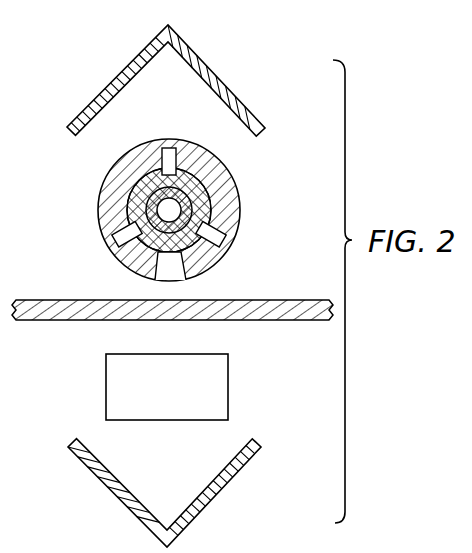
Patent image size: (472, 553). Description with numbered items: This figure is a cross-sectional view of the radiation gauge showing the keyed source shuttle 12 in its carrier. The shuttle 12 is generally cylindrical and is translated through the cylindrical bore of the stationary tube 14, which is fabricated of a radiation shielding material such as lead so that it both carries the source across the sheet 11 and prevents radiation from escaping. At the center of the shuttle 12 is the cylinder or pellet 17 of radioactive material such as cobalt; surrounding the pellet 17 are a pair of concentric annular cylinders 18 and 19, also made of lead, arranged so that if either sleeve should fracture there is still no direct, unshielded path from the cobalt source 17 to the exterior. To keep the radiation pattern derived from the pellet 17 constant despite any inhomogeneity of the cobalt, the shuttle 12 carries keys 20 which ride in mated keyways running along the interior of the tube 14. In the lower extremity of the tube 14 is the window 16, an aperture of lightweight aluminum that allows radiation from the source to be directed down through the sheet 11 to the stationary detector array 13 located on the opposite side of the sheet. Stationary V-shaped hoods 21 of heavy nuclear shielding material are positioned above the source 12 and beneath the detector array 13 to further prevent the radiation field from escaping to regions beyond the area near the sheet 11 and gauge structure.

The sheet 11 is at (300, 300).
The scanning penetrating radiation source 12 is at (122, 210).
The stationary detector array 13 is at (222, 383).
The tube 14 is at (234, 182).
The window 16 is at (178, 275).
The pellet 17 is at (192, 182).
The annular cylinder 18 is at (188, 212).
The annular cylinder 19 is at (137, 190).
The keys 20 is at (168, 150).
The V-shaped hoods 21 is at (227, 82).